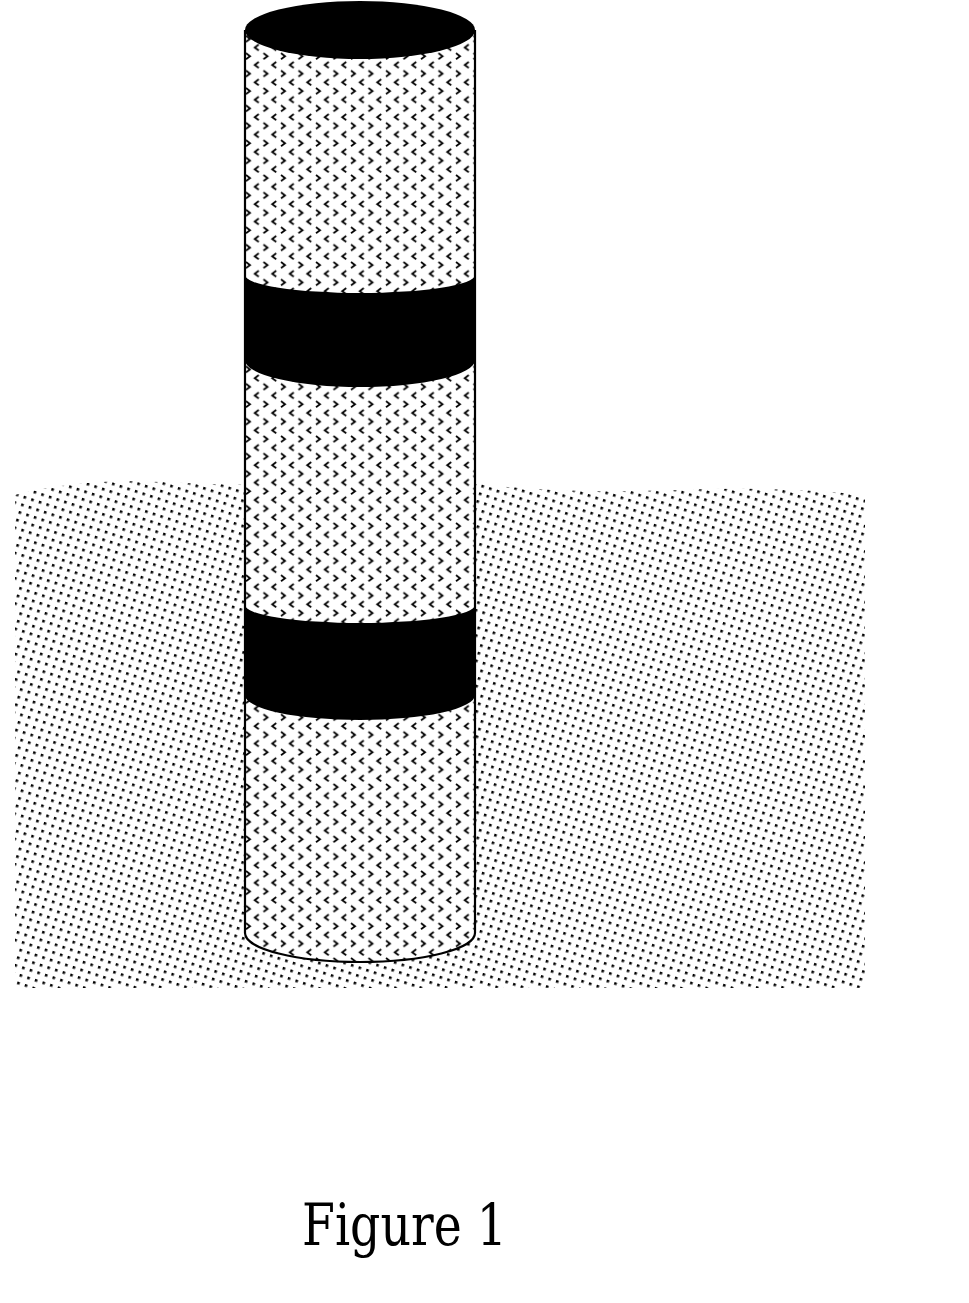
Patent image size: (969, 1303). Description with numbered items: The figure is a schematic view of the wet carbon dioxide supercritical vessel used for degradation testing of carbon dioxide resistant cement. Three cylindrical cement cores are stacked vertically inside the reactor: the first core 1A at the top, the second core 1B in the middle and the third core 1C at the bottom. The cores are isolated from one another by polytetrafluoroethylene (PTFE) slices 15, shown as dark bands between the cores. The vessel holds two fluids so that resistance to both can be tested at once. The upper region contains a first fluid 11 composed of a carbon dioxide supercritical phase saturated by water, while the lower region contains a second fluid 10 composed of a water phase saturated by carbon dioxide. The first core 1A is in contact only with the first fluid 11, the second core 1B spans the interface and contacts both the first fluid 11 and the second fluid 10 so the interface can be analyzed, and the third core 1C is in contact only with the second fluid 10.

The first core 1A is at (515, 105).
The second core 1B is at (515, 453).
The third core 1C is at (517, 799).
The polytetrafluoroethylene (PTFE) slices 15 is at (245, 313).
The first fluid 11 is at (112, 139).
The second fluid 10 is at (110, 857).